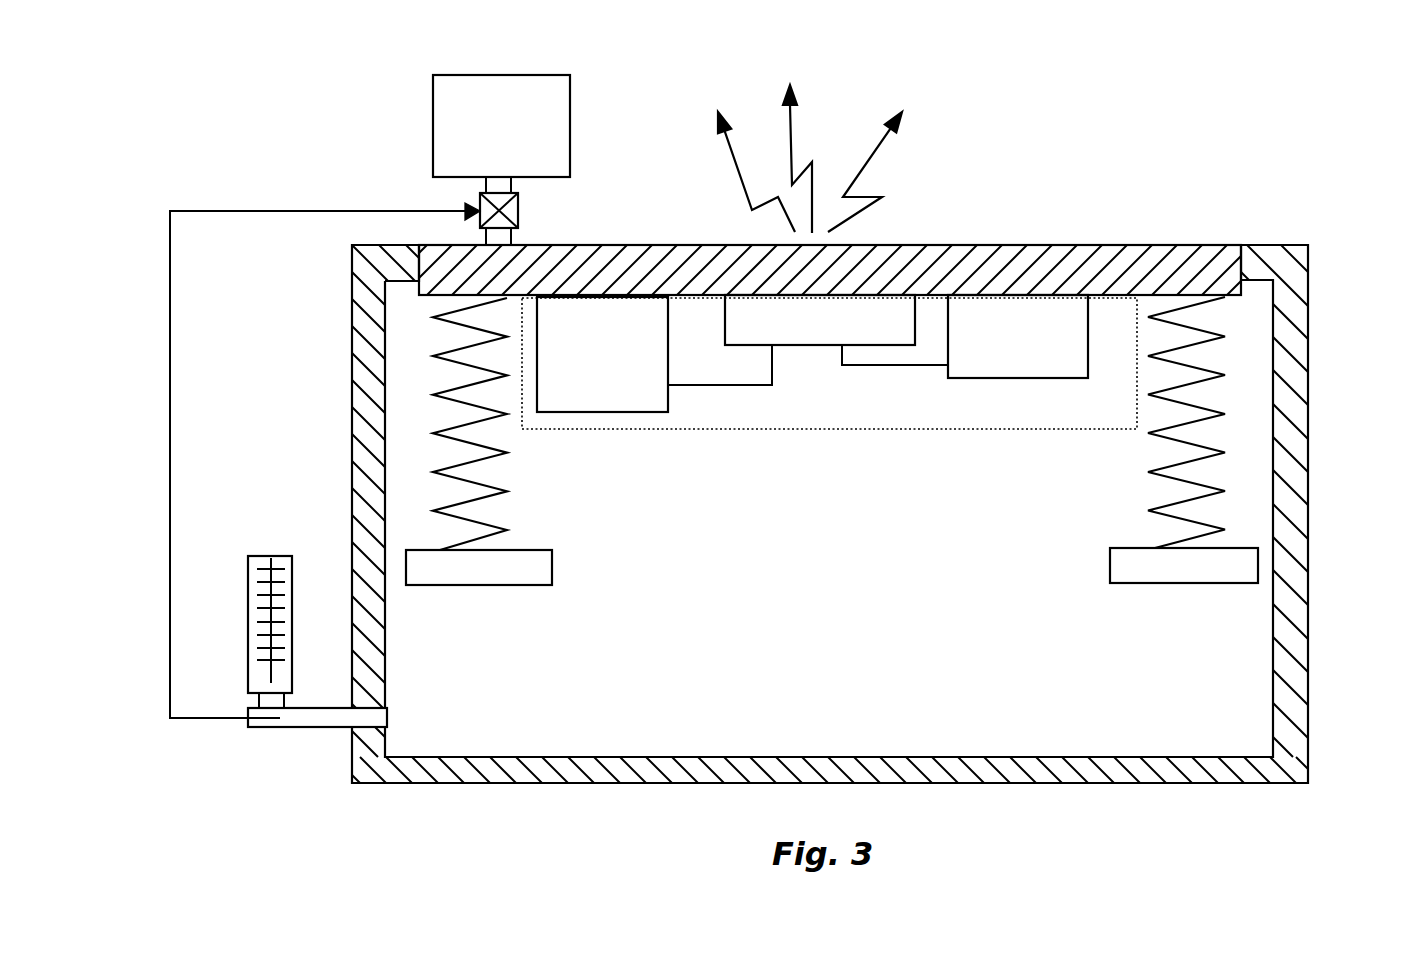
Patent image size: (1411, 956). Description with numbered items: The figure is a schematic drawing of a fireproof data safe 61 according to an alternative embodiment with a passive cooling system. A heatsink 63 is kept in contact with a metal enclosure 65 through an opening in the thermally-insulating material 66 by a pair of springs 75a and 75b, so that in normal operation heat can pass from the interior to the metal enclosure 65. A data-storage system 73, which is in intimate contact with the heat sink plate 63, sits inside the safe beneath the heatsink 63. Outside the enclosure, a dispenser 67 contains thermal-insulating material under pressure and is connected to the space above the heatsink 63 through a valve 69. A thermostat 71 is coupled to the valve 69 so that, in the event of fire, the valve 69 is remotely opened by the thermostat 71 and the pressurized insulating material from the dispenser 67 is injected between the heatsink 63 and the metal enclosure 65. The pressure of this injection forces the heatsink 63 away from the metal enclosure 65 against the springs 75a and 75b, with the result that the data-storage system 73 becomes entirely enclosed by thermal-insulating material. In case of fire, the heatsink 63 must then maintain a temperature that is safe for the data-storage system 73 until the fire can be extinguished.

The fireproof data safe 61 is at (347, 128).
The heatsink 63 is at (1241, 262).
The metal enclosure 65 is at (1308, 765).
The thermally-insulating material 66 is at (1295, 485).
The dispenser 67 is at (462, 92).
The valve 69 is at (530, 211).
The thermostat 71 is at (275, 555).
The data-storage system 73 is at (727, 428).
The spring 75a is at (453, 563).
The spring 75b is at (1162, 578).